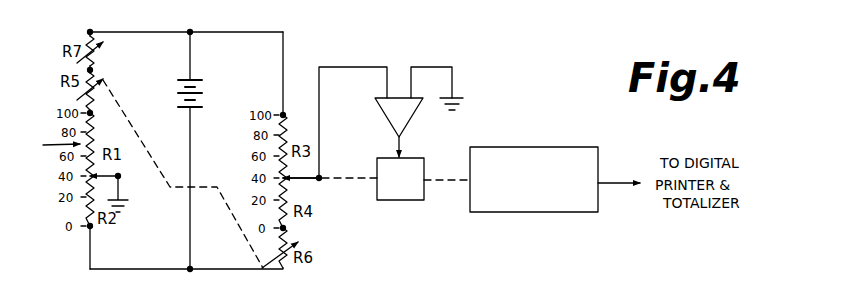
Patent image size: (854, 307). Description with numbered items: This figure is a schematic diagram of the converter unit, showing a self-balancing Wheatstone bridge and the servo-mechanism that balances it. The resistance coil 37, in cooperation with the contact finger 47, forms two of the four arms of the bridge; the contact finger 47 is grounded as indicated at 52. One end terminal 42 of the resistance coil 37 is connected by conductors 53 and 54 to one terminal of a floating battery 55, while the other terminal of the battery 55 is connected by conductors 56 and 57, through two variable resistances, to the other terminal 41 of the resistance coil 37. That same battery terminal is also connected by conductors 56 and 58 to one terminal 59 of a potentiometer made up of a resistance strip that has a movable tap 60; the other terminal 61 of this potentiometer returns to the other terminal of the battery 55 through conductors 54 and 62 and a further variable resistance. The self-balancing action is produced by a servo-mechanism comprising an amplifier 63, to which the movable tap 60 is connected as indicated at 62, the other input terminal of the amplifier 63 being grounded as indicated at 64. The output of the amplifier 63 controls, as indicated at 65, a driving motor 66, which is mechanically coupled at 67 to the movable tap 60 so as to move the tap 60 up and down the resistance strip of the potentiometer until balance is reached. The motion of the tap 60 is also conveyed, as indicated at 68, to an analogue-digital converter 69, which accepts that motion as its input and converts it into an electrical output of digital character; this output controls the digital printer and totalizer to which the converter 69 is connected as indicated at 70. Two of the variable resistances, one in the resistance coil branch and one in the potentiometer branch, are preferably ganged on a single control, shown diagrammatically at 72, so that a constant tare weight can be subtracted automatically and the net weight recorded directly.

The resistance coil 37 is at (56, 154).
The terminal of the resistance coil 41 is at (92, 115).
The end terminal 42 is at (92, 228).
The contact finger 47 is at (118, 172).
The ground connection 52 is at (128, 195).
The conductor 53 is at (143, 269).
The conductor 54 is at (190, 248).
The floating battery 55 is at (210, 95).
The conductor 56 is at (190, 45).
The conductor 57 is at (133, 30).
The conductor 58 is at (263, 30).
The potentiometer terminal 59 is at (284, 112).
The movable tap 60 is at (318, 182).
The potentiometer terminal 61 is at (287, 228).
The conductor 62 is at (238, 269).
The amplifier 63 is at (413, 118).
The ground connection 64 is at (452, 72).
The amplifier output connection 65 is at (401, 143).
The driving motor 66 is at (400, 200).
The mechanical coupling 67 is at (350, 182).
The mechanical coupling 68 is at (457, 180).
The analogue-digital converter 69 is at (535, 147).
The output connection 70 is at (610, 183).
The ganged control 72 is at (135, 137).